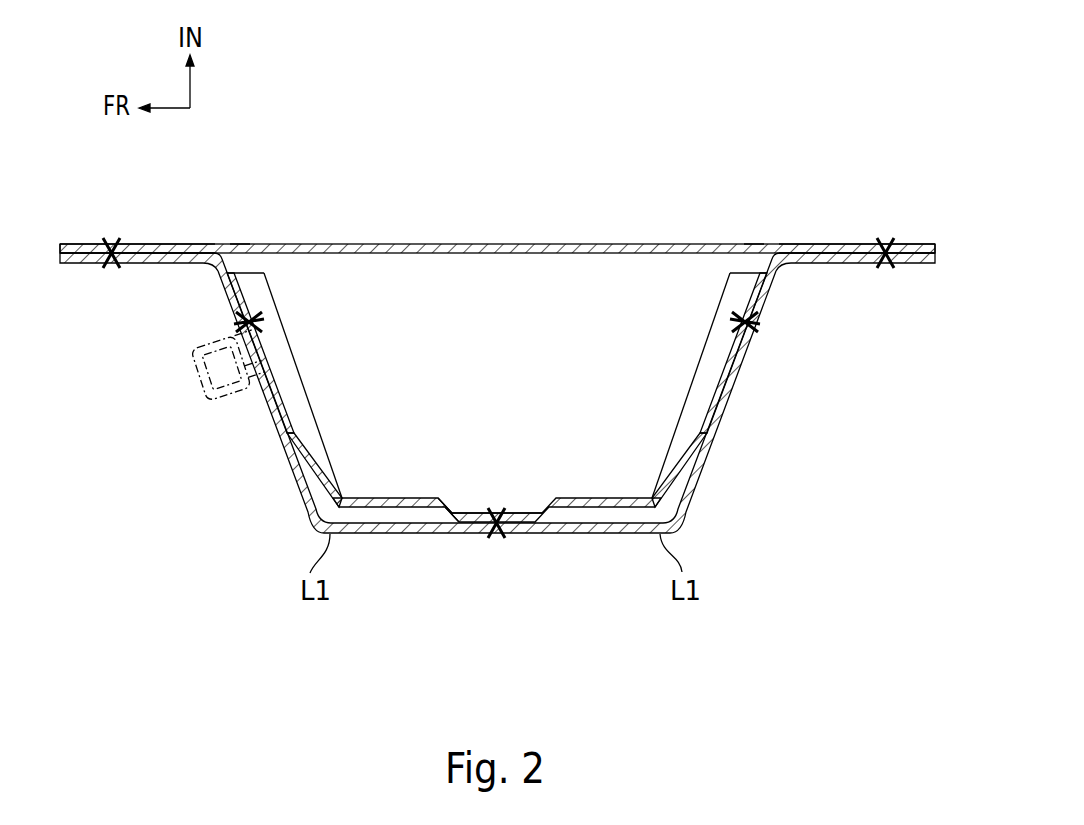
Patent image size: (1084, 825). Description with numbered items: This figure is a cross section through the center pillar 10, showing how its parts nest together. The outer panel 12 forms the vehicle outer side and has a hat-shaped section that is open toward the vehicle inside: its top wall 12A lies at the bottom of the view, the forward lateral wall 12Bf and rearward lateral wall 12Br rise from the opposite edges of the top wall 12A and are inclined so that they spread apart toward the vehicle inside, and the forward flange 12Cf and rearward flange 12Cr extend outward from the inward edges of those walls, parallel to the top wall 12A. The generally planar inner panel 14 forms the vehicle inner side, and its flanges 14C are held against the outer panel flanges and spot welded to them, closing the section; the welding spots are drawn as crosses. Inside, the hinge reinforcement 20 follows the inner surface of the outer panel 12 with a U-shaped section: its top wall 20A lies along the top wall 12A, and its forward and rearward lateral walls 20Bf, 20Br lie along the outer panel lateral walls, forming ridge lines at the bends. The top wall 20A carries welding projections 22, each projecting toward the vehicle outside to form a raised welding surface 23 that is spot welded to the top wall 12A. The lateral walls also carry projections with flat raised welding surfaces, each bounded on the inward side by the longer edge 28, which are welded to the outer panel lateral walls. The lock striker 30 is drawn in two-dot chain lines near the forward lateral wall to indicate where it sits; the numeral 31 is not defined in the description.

The center pillar 10 is at (355, 637).
The outer panel 12 is at (579, 534).
The top wall 12A is at (432, 534).
The forward lateral wall 12Bf is at (290, 462).
The rearward lateral wall 12Br is at (724, 400).
The forward flange 12Cf is at (95, 264).
The rearward flange 12Cr is at (890, 265).
The inner panel 14 is at (505, 244).
The flanges 14C is at (95, 243).
The hinge reinforcement 20 is at (405, 496).
The top wall 20A is at (592, 497).
The forward lateral wall 20Bf is at (305, 388).
The rearward lateral wall 20Br is at (690, 393).
The welding projections 22 is at (446, 500).
The raised welding surface 23 is at (536, 512).
The edge 28 is at (240, 244).
The lock striker 30 is at (198, 378).
The bolt 31 is at (212, 398).